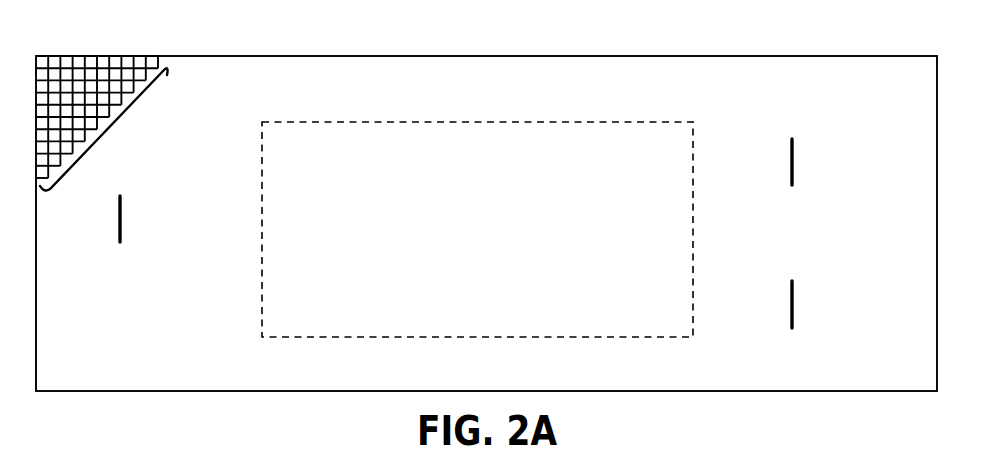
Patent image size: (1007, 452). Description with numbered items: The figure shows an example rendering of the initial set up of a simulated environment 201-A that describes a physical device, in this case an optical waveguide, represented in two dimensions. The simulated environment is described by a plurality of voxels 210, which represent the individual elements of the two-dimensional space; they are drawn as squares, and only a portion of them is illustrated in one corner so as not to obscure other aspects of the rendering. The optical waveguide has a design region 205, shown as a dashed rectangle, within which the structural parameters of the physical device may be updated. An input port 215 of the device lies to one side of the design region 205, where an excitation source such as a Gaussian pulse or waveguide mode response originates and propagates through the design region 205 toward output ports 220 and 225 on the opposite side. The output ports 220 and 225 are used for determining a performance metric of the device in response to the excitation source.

The simulated environment 201-A is at (102, 46).
The design region 205 is at (477, 212).
The plurality of voxels 210 is at (108, 130).
The input port 215 is at (117, 247).
The output port 220 is at (790, 192).
The output port 225 is at (790, 334).